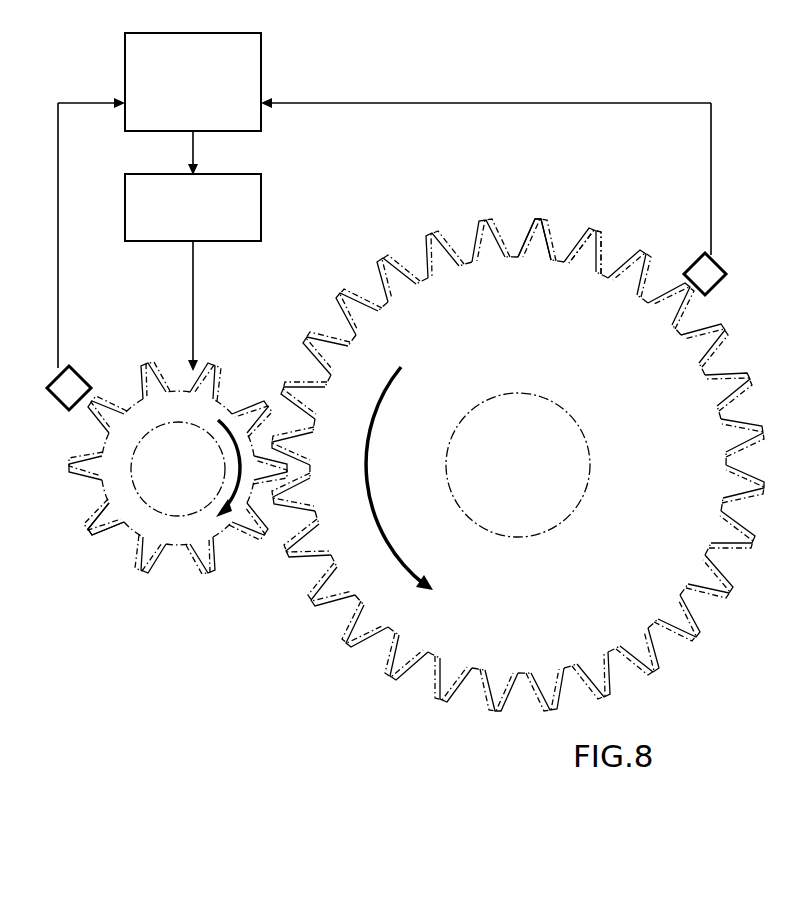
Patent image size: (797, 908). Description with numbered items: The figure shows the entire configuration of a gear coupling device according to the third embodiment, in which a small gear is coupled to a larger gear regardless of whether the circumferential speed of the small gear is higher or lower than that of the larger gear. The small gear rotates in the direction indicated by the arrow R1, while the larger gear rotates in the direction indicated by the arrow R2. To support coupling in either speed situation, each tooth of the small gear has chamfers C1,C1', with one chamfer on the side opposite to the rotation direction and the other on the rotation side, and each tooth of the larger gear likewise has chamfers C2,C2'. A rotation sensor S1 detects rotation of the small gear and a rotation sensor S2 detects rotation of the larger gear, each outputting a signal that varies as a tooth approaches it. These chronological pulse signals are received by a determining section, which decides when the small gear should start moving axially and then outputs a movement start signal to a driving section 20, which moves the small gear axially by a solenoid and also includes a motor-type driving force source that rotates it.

The driving section 20 is at (261, 210).
The rotation sensor S1 is at (78, 370).
The rotation sensor S2 is at (697, 253).
The chamfers C1,C1' is at (89, 565).
The chamfers C2,C2' is at (567, 210).
The arrow R1 is at (210, 479).
The arrow R2 is at (399, 478).